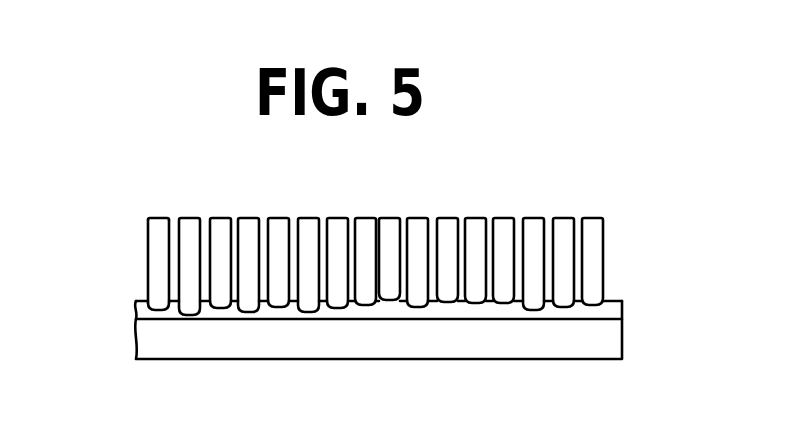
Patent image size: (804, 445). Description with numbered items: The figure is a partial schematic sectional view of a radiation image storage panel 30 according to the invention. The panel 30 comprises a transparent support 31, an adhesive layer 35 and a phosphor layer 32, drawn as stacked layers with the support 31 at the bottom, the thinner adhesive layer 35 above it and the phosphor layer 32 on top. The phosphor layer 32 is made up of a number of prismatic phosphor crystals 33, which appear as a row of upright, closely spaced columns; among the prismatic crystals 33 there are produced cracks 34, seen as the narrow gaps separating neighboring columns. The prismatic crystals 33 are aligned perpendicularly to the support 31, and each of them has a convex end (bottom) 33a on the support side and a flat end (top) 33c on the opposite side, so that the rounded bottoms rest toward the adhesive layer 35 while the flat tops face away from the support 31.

The radiation image storage panel 30 is at (606, 198).
The transparent support 31 is at (616, 340).
The phosphor layer 32 is at (635, 217).
The prismatic phosphor crystal 33 is at (148, 252).
The convex end (bottom) 33a is at (162, 303).
The flat end (top) 33c is at (170, 221).
The crack 34 is at (173, 223).
The adhesive layer 35 is at (621, 306).